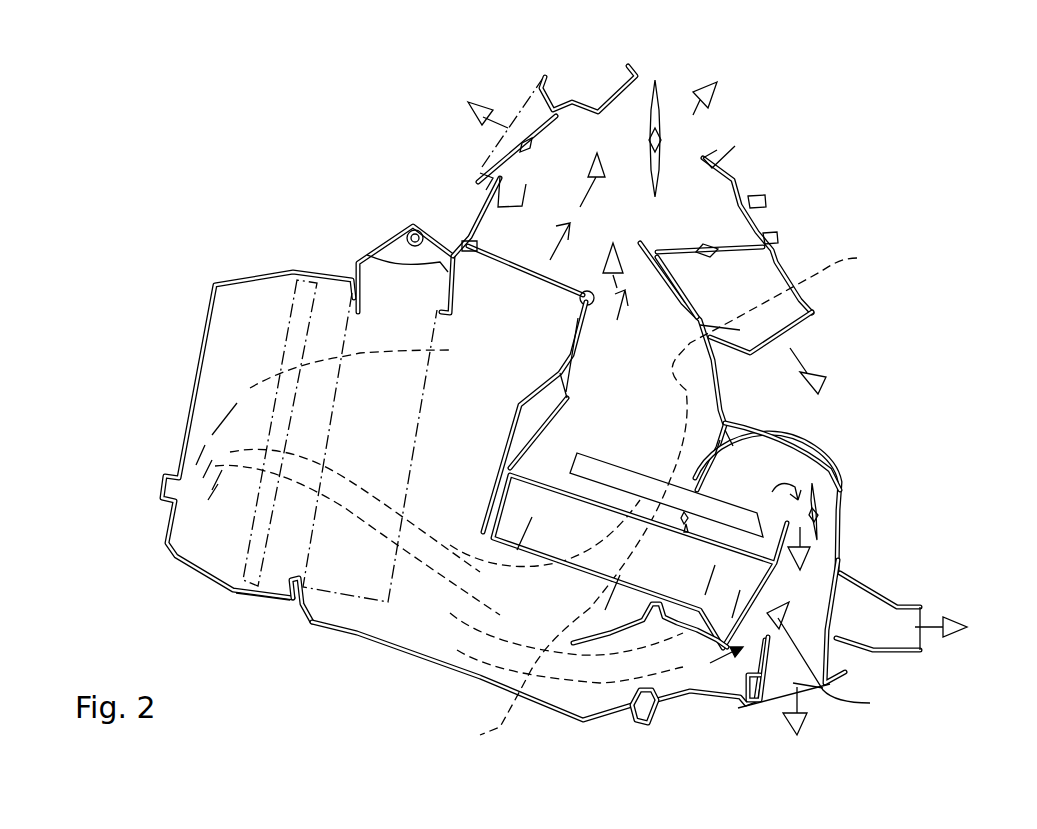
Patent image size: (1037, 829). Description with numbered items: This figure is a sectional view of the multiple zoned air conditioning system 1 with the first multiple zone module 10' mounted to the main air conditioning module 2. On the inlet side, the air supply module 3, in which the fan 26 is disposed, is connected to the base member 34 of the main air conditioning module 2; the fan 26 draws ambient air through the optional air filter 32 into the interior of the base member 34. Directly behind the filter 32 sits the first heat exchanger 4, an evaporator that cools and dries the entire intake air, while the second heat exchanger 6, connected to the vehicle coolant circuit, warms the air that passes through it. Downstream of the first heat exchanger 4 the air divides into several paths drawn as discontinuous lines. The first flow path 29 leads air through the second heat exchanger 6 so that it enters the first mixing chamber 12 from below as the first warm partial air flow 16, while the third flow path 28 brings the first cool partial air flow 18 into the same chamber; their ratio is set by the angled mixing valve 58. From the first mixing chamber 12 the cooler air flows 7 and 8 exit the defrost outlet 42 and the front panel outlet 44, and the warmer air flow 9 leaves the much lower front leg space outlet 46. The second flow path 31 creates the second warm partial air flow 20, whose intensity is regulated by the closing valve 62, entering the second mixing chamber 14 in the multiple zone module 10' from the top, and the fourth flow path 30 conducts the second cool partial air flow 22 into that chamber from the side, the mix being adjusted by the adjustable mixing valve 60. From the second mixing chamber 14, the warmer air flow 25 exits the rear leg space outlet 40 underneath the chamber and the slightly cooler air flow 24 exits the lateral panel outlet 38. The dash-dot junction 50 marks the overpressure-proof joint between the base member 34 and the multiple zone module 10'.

The multiple zoned air conditioning system 1 is at (905, 197).
The main air conditioning module 2 is at (318, 642).
The air supply module 3 is at (175, 392).
The first heat exchanger 4 is at (323, 570).
The second heat exchanger 6 is at (480, 632).
The air-conditionable air flow 7 is at (500, 121).
The air-conditionable air flow 8 is at (708, 116).
The second air-conditionable air flow 9 is at (810, 370).
The first multiple zone module 10' is at (967, 425).
The first mixing chamber 12 is at (612, 133).
The second mixing chamber 14 is at (813, 598).
The first warm partial air flow 16 is at (622, 250).
The first cool partial air flow 18 is at (540, 128).
The second warm partial air flow 20 is at (800, 541).
The second cool partial air flow 22 is at (832, 658).
The second air-conditionable air flow 24 is at (934, 618).
The air-conditionable air flow 25 is at (812, 716).
The fan 26 is at (745, 428).
The third flow path 28 is at (433, 353).
The first flow path 29 is at (650, 364).
The fourth flow path 30 is at (722, 665).
The second flow path 31 is at (793, 487).
The air filter 32 is at (233, 588).
The base member 34 is at (397, 651).
The panel outlet 38 is at (927, 640).
The leg space outlet 40 is at (810, 687).
The defrost outlet 42 is at (530, 88).
The front panel outlet 44 is at (710, 142).
The front leg space outlet 46 is at (767, 326).
The junction 50 is at (664, 502).
The angled mixing valve 58 is at (497, 243).
The adjustable mixing valve 60 is at (707, 652).
The closing valve 62 is at (812, 493).